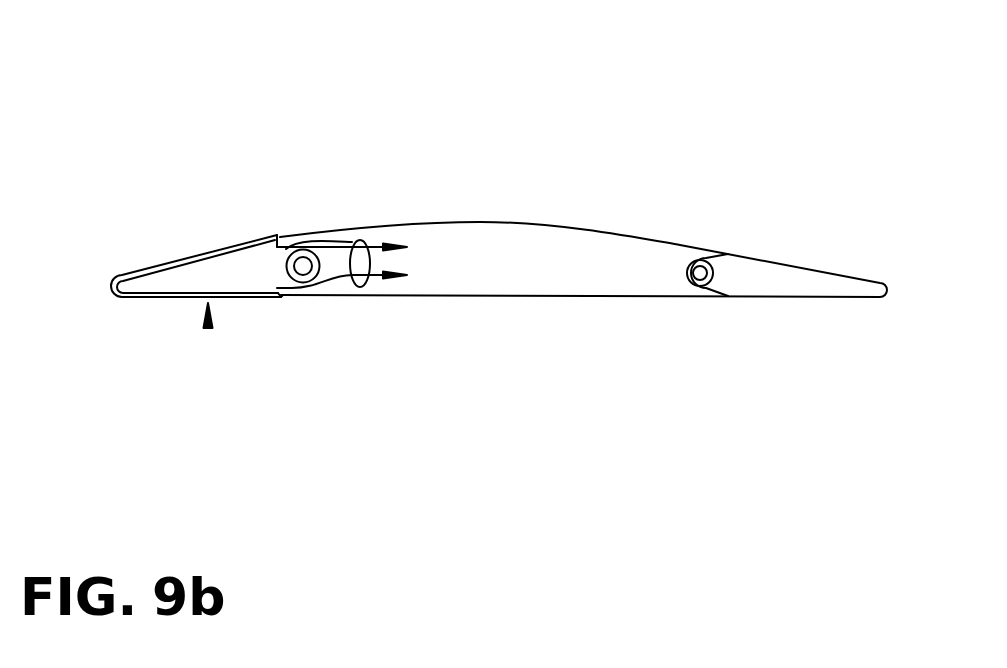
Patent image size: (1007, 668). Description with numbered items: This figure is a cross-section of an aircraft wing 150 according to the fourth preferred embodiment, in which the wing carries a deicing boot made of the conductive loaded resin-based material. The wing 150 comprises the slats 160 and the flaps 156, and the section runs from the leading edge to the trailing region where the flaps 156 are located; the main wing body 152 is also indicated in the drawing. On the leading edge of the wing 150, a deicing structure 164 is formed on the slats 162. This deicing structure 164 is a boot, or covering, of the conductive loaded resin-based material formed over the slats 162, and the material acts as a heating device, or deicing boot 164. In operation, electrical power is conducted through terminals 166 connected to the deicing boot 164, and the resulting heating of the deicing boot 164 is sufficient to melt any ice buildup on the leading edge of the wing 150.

The aircraft wing 150 is at (231, 48).
The body / hull 152 is at (545, 224).
The flaps 156 is at (753, 275).
The slats 160 is at (208, 328).
The slats 162 is at (243, 287).
The deicing structure 164 is at (196, 253).
The terminals 166 is at (362, 240).